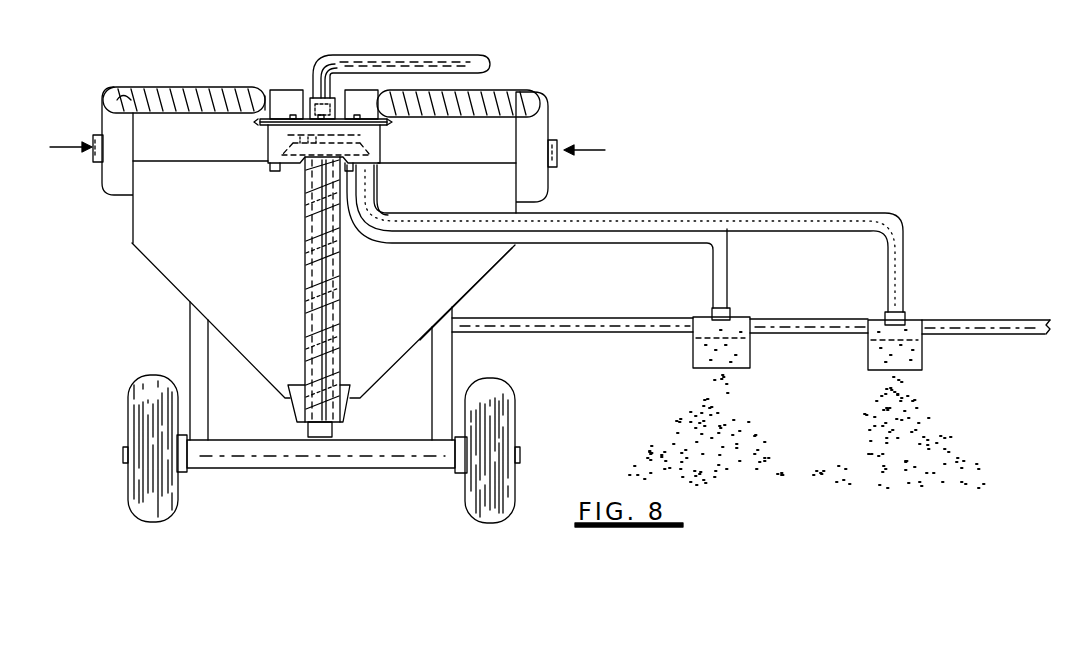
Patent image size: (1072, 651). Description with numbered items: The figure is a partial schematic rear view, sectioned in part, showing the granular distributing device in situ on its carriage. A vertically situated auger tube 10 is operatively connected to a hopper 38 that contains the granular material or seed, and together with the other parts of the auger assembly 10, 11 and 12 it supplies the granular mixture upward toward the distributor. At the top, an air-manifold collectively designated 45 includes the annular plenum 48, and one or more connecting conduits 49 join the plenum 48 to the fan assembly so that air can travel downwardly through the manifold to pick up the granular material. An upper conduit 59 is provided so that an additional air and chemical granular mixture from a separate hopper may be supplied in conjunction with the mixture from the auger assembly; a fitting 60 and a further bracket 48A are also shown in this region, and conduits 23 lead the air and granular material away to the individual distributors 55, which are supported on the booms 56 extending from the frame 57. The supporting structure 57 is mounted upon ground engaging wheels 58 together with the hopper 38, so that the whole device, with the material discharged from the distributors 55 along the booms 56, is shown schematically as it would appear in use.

The auger tube 10 is at (299, 284).
The auger assembly component 11 is at (320, 254).
The auger assembly component 12 is at (312, 241).
The conduit 23 is at (375, 207).
The hopper 38 is at (170, 262).
The air-manifold 45 is at (262, 52).
The annular plenum 48 is at (264, 118).
The mounting bracket 48A is at (542, 133).
The connecting conduit 49 is at (180, 88).
The distributor 55 is at (698, 358).
The boom 56 is at (652, 324).
The frame 57 is at (443, 373).
The ground engaging wheel 58 is at (150, 376).
The upper conduit 59 is at (362, 58).
The fitting 60 is at (310, 103).